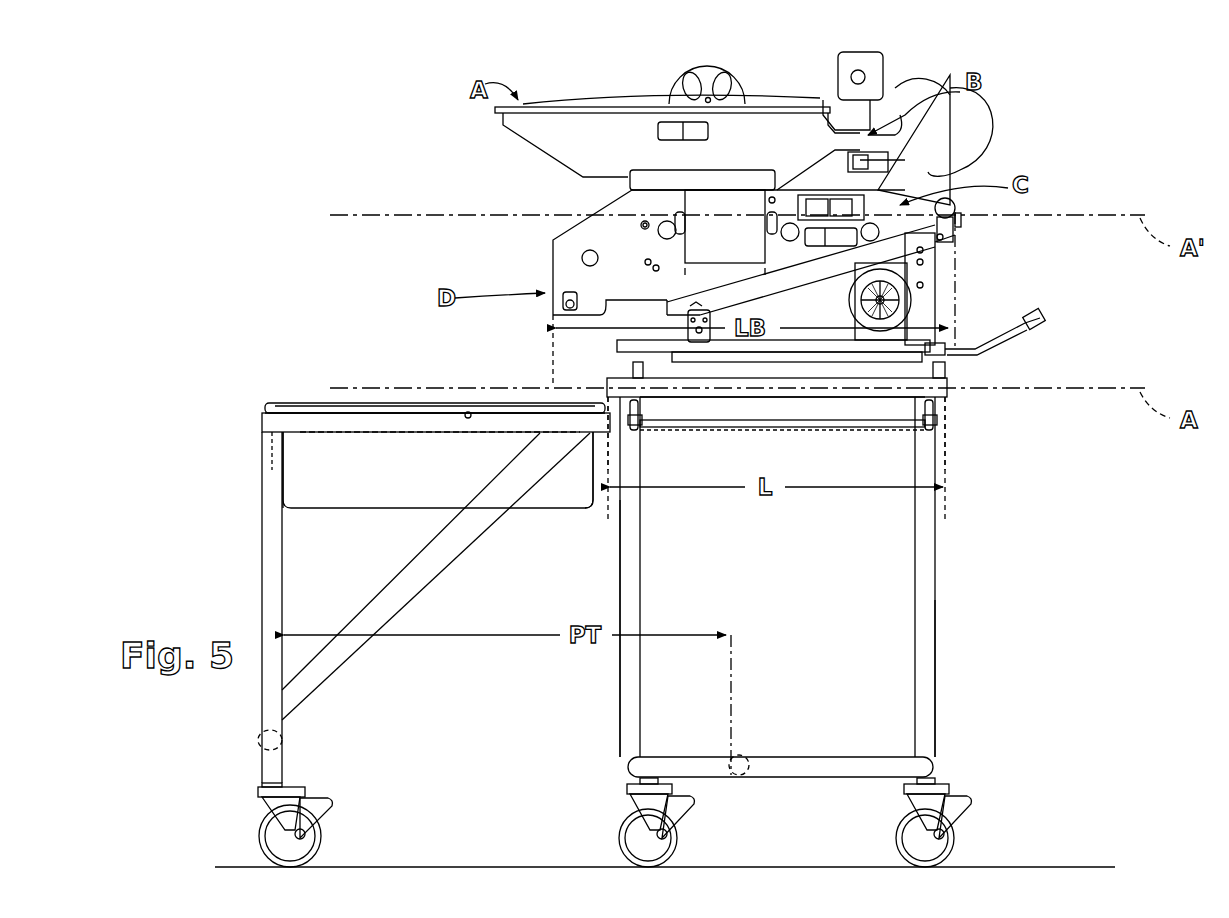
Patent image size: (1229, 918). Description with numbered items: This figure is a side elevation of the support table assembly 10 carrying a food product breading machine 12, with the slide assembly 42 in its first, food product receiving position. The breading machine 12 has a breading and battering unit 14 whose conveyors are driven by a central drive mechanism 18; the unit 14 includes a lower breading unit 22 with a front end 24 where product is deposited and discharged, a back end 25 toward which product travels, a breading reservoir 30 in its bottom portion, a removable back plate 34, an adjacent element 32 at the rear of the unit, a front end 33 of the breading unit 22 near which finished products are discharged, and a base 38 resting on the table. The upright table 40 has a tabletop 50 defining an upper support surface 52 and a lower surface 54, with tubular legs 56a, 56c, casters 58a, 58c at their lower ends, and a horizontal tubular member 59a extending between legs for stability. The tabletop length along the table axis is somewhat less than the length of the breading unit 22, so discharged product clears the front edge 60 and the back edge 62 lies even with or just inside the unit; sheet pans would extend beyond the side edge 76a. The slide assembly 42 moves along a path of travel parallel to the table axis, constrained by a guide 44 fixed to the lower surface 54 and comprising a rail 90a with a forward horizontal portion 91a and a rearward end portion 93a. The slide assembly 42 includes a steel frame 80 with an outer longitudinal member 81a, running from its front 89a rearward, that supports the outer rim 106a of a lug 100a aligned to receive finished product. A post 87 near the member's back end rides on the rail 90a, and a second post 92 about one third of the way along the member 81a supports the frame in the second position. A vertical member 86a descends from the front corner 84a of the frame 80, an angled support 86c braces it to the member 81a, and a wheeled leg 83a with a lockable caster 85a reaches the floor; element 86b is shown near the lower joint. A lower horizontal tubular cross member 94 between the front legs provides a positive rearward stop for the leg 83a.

The support table assembly 10 is at (975, 448).
The food product breading machine 12 is at (1050, 205).
The breading and battering unit 14 is at (575, 205).
The central drive mechanism 18 is at (937, 287).
The breading unit 22 is at (548, 268).
The front end 24 is at (492, 116).
The back end 25 is at (968, 155).
The breading reservoir 30 is at (630, 297).
The switch 32 is at (980, 208).
The front end of breading unit 33 is at (545, 300).
The back plate 34 is at (963, 235).
The base 38 is at (935, 348).
The upright table 40 is at (963, 420).
The slide assembly 42 is at (315, 395).
The guide 44 is at (712, 430).
The tabletop 50 is at (950, 380).
The upper support surface 52 is at (752, 372).
The lower surface 54 is at (782, 375).
The tubular leg 56a is at (630, 672).
The tubular leg 56c is at (925, 715).
The caster 58a is at (630, 808).
The caster 58c is at (922, 806).
The horizontal tubular member 59a is at (798, 767).
The front edge 60 is at (575, 415).
The back edge 62 is at (962, 397).
The side edge 76a is at (915, 400).
The steel frame 80 is at (335, 432).
The outer longitudinal member 81a is at (392, 425).
The wheeled leg 83a is at (272, 762).
The front corner 84a is at (268, 410).
The lockable caster 85a is at (262, 802).
The vertical member 86a is at (278, 590).
The pivot 86b is at (283, 728).
The angled support 86c is at (338, 644).
The support post 87 is at (640, 420).
The front of longitudinal member 89a is at (258, 430).
The rail 90a is at (855, 400).
The forward horizontal portion 91a is at (608, 400).
The second support post 92 is at (468, 418).
The rearward end portion 93a is at (948, 440).
The lower horizontal tubular cross member 94 is at (740, 735).
The lug 100a is at (375, 512).
The outer rim 106a is at (390, 400).